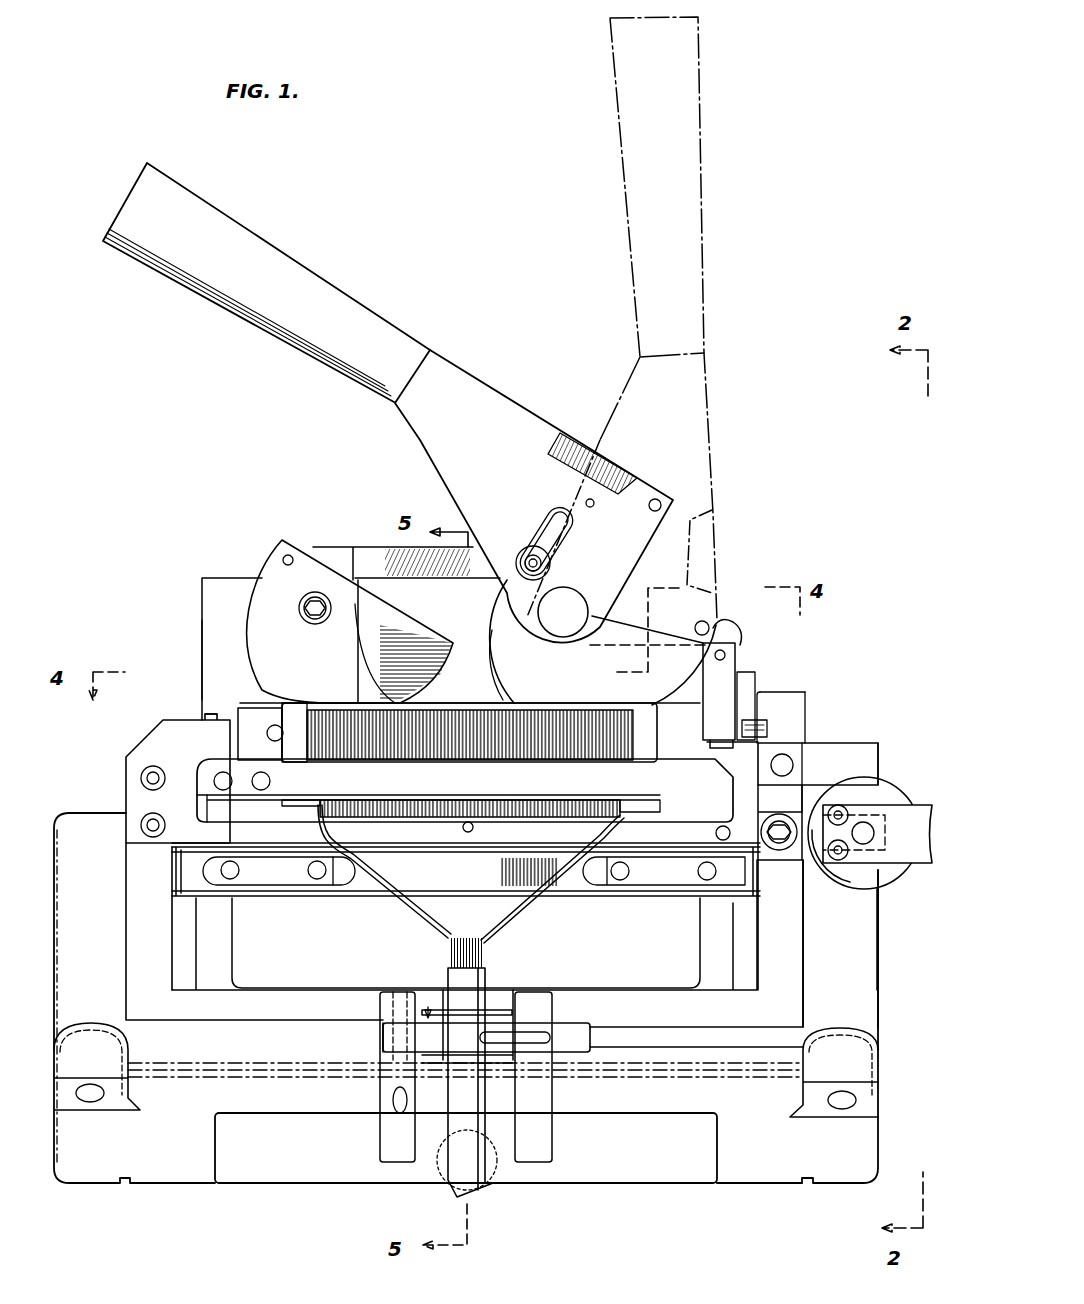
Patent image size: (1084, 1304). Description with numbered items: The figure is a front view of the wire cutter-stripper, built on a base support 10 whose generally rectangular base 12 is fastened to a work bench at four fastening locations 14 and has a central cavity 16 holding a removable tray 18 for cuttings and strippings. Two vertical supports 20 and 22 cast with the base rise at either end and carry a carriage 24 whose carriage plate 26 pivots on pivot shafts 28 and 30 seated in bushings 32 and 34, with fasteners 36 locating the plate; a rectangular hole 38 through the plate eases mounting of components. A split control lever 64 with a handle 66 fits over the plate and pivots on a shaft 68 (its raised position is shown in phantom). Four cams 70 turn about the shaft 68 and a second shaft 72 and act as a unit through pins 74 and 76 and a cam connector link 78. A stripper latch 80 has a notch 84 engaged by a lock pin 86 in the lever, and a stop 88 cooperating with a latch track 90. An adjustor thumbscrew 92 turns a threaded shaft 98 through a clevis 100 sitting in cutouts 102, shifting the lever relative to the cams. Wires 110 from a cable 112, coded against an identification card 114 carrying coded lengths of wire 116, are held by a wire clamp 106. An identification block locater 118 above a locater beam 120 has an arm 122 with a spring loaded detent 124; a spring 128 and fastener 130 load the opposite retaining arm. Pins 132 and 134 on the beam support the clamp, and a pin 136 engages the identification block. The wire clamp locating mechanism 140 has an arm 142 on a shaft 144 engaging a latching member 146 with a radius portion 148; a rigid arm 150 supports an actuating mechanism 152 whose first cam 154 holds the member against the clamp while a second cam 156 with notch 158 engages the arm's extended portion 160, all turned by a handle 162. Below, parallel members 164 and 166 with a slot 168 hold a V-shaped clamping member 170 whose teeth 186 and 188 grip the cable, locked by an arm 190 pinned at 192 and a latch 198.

The base support 10 is at (878, 995).
The base 12 is at (832, 1172).
The fastening locations 14 is at (865, 1100).
The central cavity 16 is at (234, 978).
The tray 18 is at (245, 1175).
The vertical support 20 is at (803, 985).
The vertical support 22 is at (130, 898).
The carriage 24 is at (203, 578).
The carriage plate 26 is at (202, 622).
The pivot shaft 28 is at (647, 882).
The pivot shaft 30 is at (280, 877).
The bushing 32 is at (765, 880).
The bushing 34 is at (187, 868).
The fasteners 36 is at (615, 882).
The rectangular hole 38 is at (444, 700).
The control lever 64 is at (448, 362).
The handle 66 is at (258, 237).
The shaft 68 is at (572, 603).
The cams 70 is at (285, 552).
The second shaft 72 is at (315, 624).
The pin 74 is at (528, 556).
The pin 76 is at (290, 556).
The cam connector link 78 is at (360, 547).
The stripper latch 80 is at (742, 648).
The notch 84 is at (710, 626).
The lock pin 86 is at (658, 499).
The stop 88 is at (752, 673).
The latch track 90 is at (765, 688).
The adjustor thumbscrew 92 is at (570, 438).
The threaded shaft 98 is at (572, 527).
The clevis 100 is at (560, 548).
The cutouts 102 is at (550, 514).
The wire clamp 106 is at (228, 808).
The wires 110 is at (418, 908).
The cable 112 is at (478, 1185).
The identification card 114 is at (260, 734).
The coded lengths of wire 116 is at (312, 752).
The identification block locater 118 is at (147, 745).
The identification block locater beam 120 is at (125, 820).
The arm 122 is at (232, 705).
The spring loaded detent 124 is at (207, 712).
The spring 128 is at (800, 732).
The fastener 130 is at (758, 724).
The pin 132 is at (467, 834).
The second pin 134 is at (716, 834).
The pin 136 is at (271, 780).
The wire clamp locating mechanism 140 is at (830, 738).
The arm 142 is at (800, 771).
The shaft 144 is at (790, 845).
The wire clamp latching member 146 is at (872, 742).
The radius portion 148 is at (728, 790).
The rigidly positioned arm 150 is at (905, 880).
The actuating mechanism 152 is at (882, 782).
The first cam 154 is at (858, 890).
The second cam 156 is at (890, 888).
The notch 158 is at (880, 742).
The extended portion 160 is at (812, 796).
The handle 162 is at (915, 805).
The parallel member 164 is at (540, 1103).
The parallel member 166 is at (380, 1098).
The slot 168 is at (380, 1028).
The V-shaped clamping member 170 is at (428, 1005).
The V-shaped tooth 186 is at (490, 1005).
The V-shaped tooth 188 is at (503, 1065).
The pivotally mounted arm 190 is at (585, 1045).
The pin 192 is at (378, 1054).
The latch 198 is at (540, 1034).